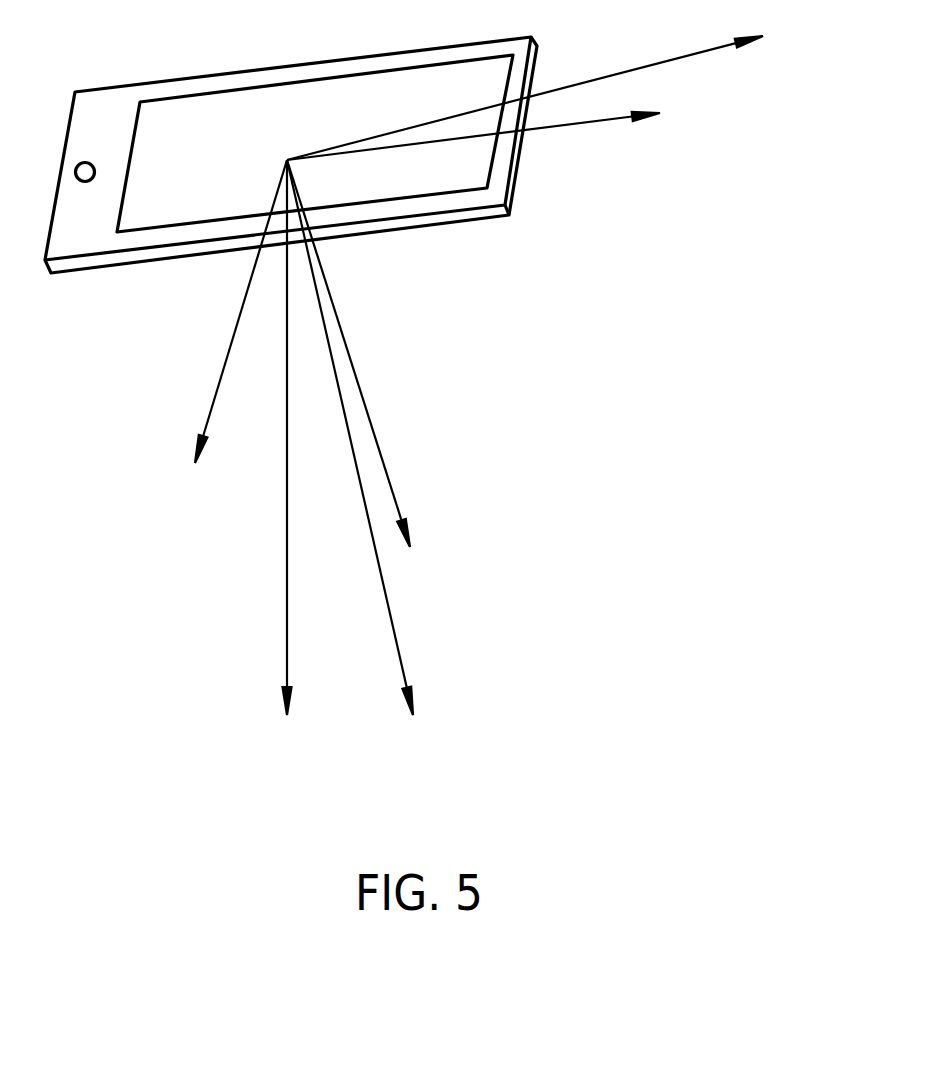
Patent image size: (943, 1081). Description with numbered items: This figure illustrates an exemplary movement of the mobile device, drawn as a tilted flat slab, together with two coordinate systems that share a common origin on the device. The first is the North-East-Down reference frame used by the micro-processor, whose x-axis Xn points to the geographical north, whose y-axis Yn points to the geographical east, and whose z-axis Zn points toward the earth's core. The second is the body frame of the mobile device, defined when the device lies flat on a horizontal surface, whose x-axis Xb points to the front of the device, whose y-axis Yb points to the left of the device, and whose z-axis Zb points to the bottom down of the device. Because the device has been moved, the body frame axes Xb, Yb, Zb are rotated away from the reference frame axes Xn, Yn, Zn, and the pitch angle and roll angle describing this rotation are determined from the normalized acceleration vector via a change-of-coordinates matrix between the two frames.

The x-axis of the reference frame Xn is at (555, 84).
The x-axis of the body frame Xb is at (505, 123).
The y-axis of the body frame Yb is at (235, 336).
The z-axis of the reference frame Zn is at (292, 460).
The z-axis of the body frame Zb is at (377, 356).
The y-axis of the reference frame Yn is at (380, 438).